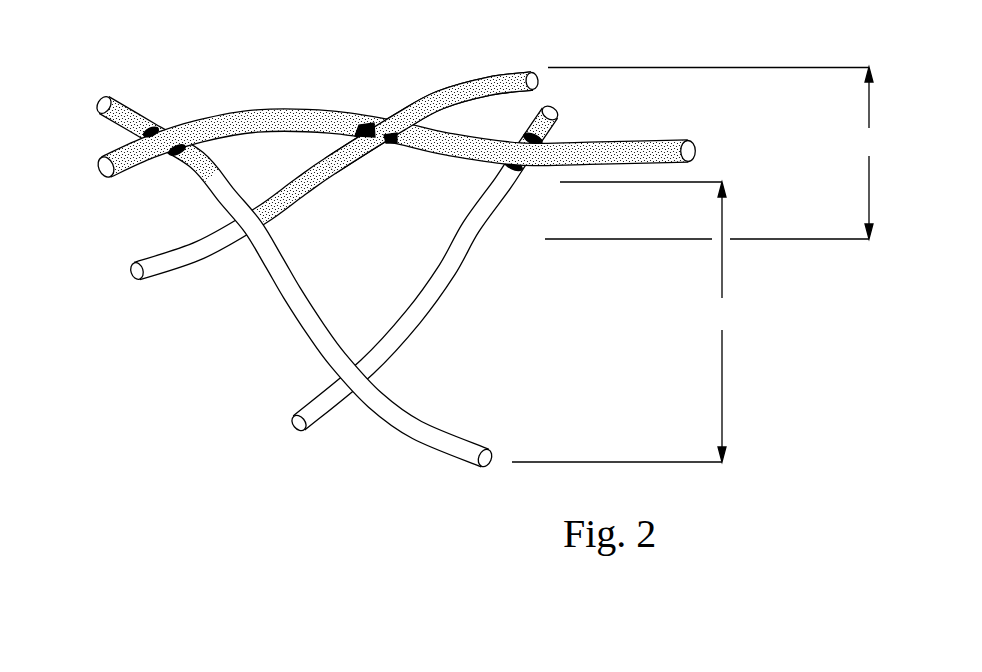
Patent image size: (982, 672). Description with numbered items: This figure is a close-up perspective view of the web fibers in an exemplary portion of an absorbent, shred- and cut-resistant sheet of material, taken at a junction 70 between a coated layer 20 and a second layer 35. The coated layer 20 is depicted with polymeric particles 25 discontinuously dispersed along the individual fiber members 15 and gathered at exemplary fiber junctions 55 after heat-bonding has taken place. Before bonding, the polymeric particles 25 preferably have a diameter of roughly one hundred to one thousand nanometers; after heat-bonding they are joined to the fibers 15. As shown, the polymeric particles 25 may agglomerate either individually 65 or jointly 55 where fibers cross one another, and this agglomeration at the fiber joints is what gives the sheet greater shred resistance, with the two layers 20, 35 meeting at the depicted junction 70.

The fiber members 15 is at (135, 275).
The coated layer 20 is at (715, 153).
The polymeric particles 25 is at (130, 168).
The layer 35 is at (625, 322).
The fiber junctions 55 is at (360, 125).
The individually agglomerated particles 65 is at (400, 130).
The junction 70 is at (312, 227).